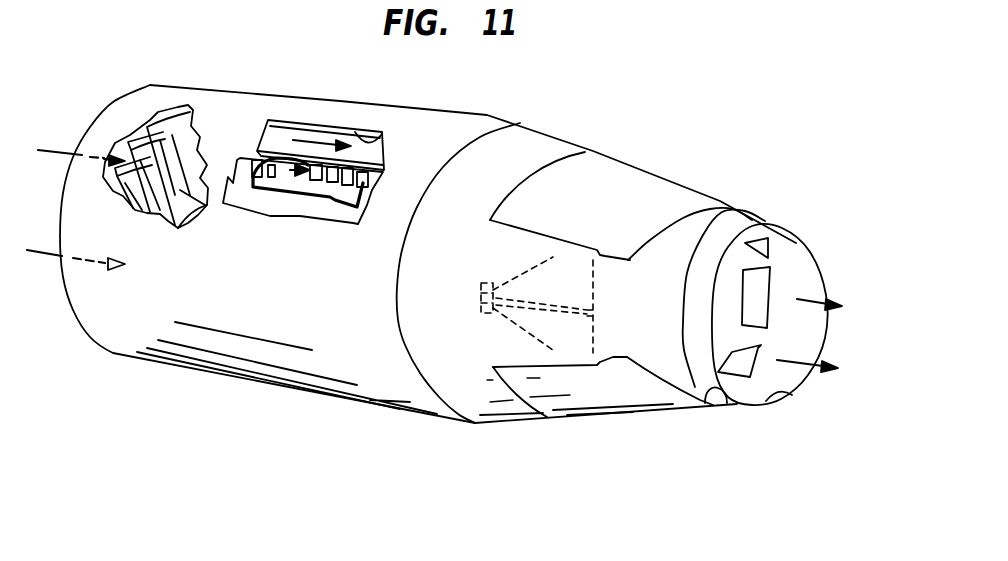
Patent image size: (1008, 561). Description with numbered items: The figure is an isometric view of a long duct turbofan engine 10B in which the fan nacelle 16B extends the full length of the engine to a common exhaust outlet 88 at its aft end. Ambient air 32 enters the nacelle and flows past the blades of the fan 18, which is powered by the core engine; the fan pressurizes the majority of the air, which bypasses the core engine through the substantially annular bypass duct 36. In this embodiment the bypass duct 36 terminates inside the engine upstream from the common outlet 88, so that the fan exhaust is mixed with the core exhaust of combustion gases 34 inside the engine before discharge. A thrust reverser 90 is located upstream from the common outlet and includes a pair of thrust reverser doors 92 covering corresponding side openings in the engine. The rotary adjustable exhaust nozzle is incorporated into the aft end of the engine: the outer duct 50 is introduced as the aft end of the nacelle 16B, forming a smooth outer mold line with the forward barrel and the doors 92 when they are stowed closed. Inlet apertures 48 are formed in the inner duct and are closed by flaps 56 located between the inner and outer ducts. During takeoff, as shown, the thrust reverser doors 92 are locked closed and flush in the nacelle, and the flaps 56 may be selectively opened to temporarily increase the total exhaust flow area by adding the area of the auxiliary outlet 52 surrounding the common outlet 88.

The turbofan engine 10B is at (490, 111).
The fan nacelle 16B is at (240, 384).
The fan 18 is at (172, 137).
The ambient air 32 is at (50, 150).
The combustion gases 34 is at (276, 172).
The bypass duct 36 is at (390, 130).
The inlet apertures 48 is at (753, 292).
The outer duct 50 is at (748, 216).
The auxiliary outlet 52 is at (733, 407).
The flaps 56 is at (757, 307).
The common exhaust outlet 88 is at (797, 393).
The thrust reverser 90 is at (668, 138).
The thrust reverser doors 92 is at (612, 213).